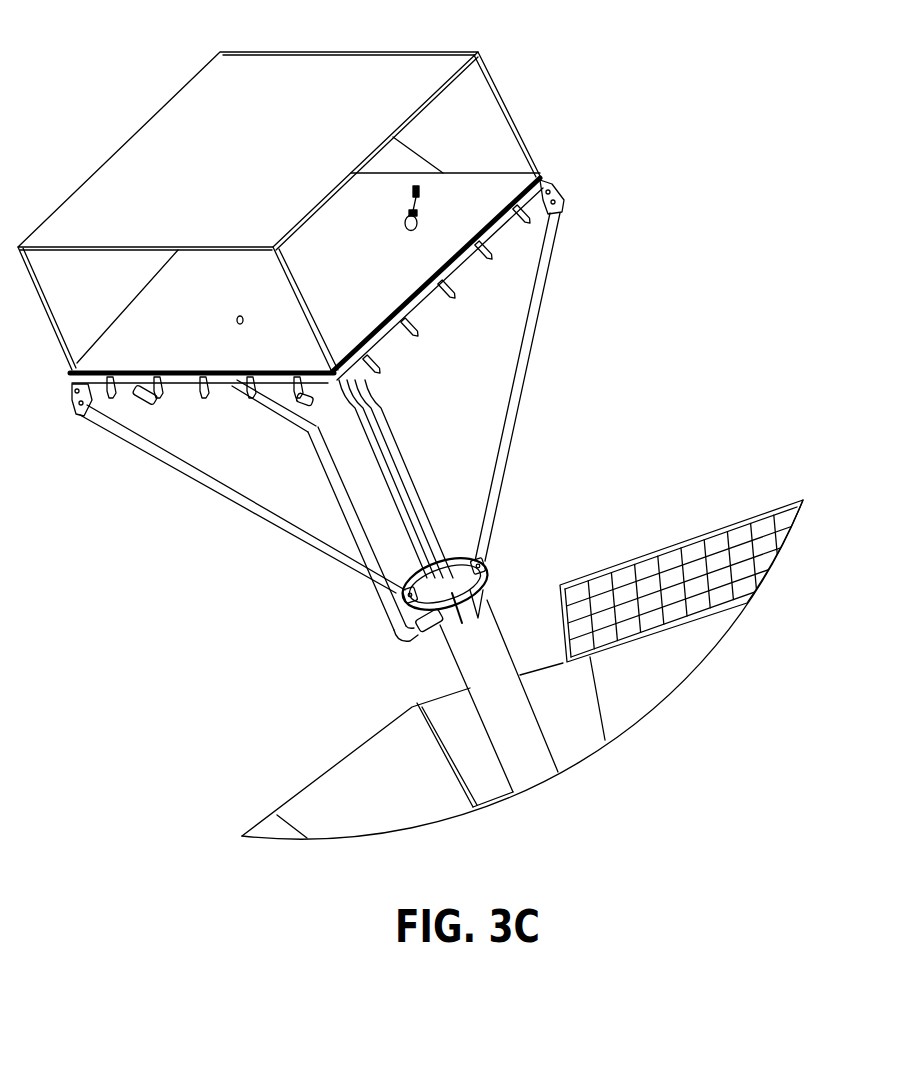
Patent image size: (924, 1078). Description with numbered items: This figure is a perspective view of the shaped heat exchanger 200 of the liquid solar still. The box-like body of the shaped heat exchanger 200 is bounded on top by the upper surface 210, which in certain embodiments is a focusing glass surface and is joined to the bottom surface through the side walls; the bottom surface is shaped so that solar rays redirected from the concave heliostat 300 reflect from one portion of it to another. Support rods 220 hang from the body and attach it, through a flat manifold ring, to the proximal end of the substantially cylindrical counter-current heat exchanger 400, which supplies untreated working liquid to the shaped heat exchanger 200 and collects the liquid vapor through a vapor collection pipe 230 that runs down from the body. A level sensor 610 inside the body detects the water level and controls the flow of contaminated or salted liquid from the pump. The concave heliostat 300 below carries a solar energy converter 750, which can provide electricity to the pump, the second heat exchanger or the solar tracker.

The shaped heat exchanger 200 is at (375, 272).
The upper surface 210 is at (325, 62).
The support rods 220 is at (207, 478).
The conduit pipe 230 is at (340, 488).
The concave heliostat 300 is at (358, 775).
The counter-current heat exchanger 400 is at (465, 663).
The level sensor 610 is at (417, 192).
The solar energy converter 750 is at (677, 558).